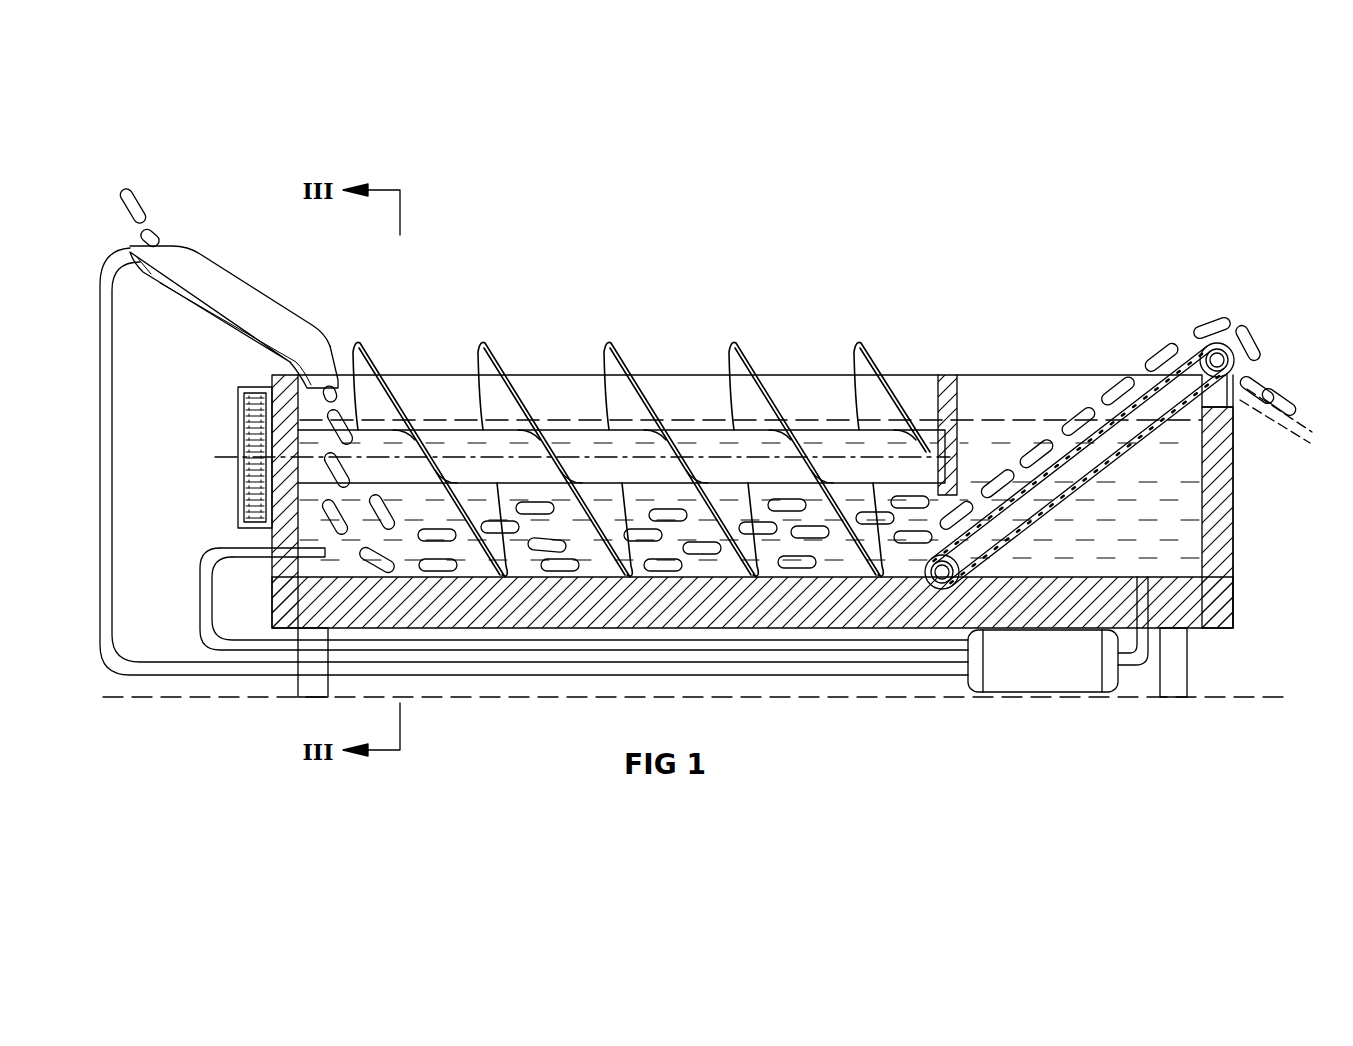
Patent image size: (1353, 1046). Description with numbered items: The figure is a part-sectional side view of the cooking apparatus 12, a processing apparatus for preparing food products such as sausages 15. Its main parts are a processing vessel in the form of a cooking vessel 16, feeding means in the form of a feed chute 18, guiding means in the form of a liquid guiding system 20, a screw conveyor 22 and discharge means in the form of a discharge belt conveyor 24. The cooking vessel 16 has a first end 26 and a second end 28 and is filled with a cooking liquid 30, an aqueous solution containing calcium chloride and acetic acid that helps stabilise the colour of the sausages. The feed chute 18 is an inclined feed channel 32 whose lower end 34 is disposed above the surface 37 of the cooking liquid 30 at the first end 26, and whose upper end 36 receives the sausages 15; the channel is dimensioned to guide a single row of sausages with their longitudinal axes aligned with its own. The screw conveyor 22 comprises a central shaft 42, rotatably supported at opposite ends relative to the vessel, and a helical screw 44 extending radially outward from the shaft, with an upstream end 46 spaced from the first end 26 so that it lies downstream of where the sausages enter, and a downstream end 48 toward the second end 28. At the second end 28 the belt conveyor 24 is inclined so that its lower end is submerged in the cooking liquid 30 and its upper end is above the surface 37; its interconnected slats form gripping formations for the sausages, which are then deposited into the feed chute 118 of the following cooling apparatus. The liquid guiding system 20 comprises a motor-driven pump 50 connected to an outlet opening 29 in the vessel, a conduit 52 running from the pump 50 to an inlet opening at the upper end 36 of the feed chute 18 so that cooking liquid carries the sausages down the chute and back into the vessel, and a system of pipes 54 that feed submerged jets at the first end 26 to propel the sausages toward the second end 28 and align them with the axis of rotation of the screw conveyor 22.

The cooking apparatus 12 is at (626, 422).
The sausages 15 is at (352, 438).
The cooking vessel 16 is at (1230, 510).
The feed chute 18 is at (239, 297).
The liquid guiding system 20 is at (229, 532).
The screw conveyor 22 is at (638, 350).
The discharge belt conveyor 24 is at (1136, 449).
The first end 26 is at (233, 392).
The second end 28 is at (797, 536).
The outlet opening 29 is at (1144, 640).
The cooking liquid 30 is at (1059, 549).
The feed channel 32 is at (254, 297).
The lower end 34 is at (334, 354).
The upper end 36 is at (166, 238).
The surface 37 is at (557, 414).
The central shaft 42 is at (858, 432).
The helical screw 44 is at (752, 350).
The upstream end 46 is at (360, 340).
The downstream end 48 is at (907, 361).
The motor-driven pump 50 is at (1052, 682).
The conduit 52 is at (178, 668).
The system of pipes 54 is at (258, 642).
The feed chute 118 is at (1300, 412).